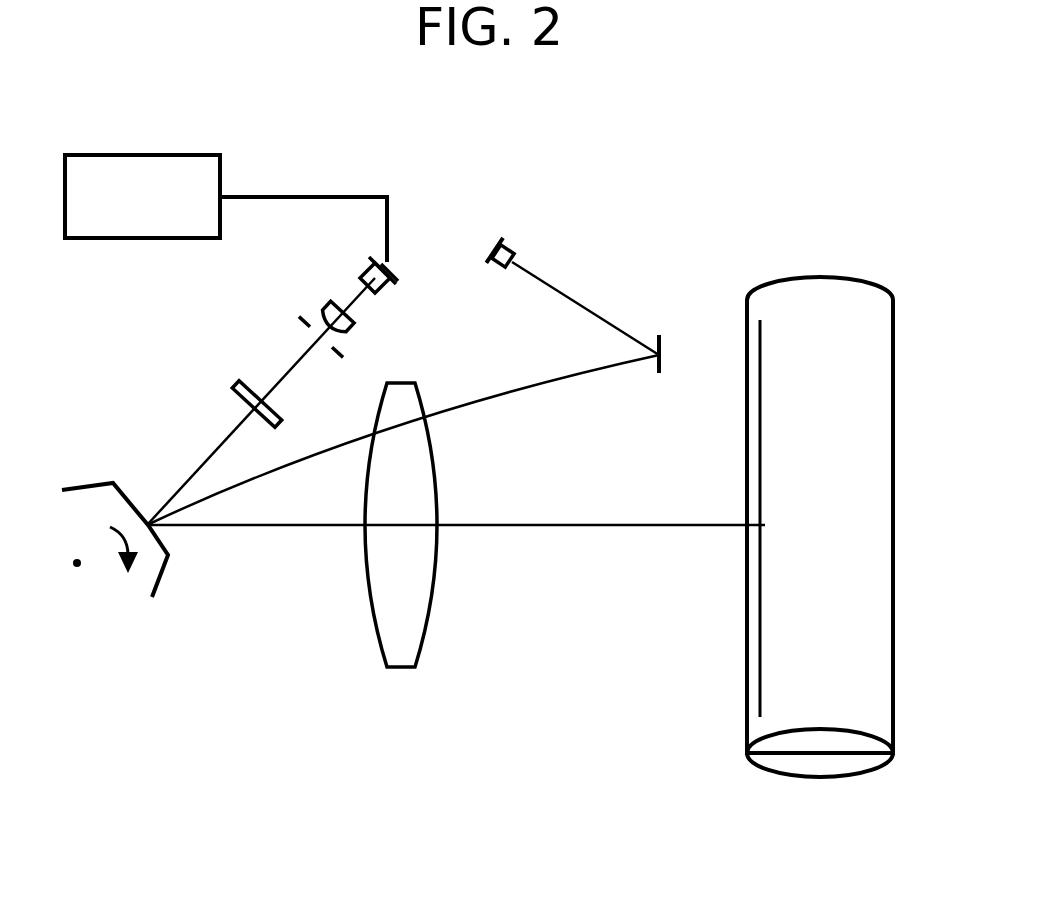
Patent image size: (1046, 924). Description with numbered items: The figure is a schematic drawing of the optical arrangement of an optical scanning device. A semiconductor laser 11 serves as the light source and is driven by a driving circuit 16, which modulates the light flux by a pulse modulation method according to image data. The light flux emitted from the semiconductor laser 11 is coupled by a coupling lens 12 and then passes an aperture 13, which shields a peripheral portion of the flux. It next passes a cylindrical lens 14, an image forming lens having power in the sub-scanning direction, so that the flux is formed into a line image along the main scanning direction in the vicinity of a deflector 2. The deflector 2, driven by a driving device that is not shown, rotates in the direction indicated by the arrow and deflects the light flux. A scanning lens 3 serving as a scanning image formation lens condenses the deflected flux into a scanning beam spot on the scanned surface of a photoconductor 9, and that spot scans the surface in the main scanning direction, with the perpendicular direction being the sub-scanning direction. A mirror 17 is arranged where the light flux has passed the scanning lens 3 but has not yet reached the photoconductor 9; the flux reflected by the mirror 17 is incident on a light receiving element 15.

The deflector 2 is at (88, 485).
The scanning lens 3 is at (368, 587).
The photoconductor 9 is at (826, 290).
The semiconductor laser 11 is at (383, 291).
The coupling lens 12 is at (352, 330).
The aperture 13 is at (298, 320).
The cylindrical lens 14 is at (272, 409).
The light receiving element 15 is at (502, 240).
The driving circuit 16 is at (203, 160).
The mirror 17 is at (660, 340).